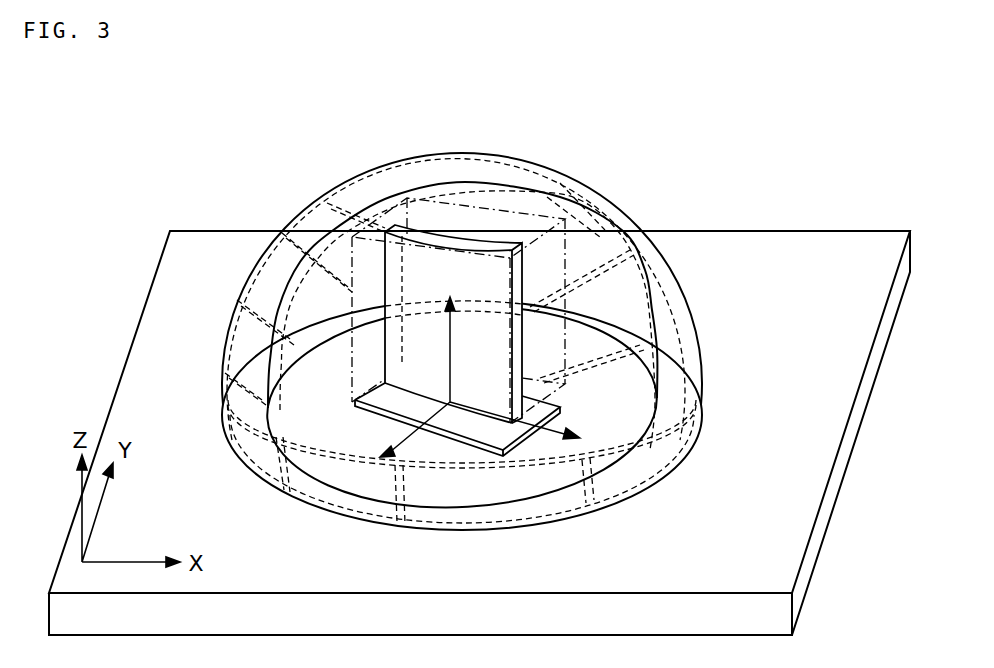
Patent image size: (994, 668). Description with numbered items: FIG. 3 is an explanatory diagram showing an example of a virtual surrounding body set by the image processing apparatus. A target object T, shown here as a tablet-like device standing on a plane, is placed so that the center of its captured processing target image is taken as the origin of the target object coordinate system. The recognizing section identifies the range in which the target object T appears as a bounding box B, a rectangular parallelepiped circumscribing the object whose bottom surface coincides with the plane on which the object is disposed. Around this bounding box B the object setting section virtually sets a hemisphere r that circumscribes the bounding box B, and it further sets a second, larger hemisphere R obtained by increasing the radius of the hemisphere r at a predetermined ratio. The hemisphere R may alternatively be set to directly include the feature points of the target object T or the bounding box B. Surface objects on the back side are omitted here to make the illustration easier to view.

The target object T is at (452, 230).
The bounding box B is at (568, 218).
The hemisphere r is at (614, 247).
The hemisphere R is at (680, 268).